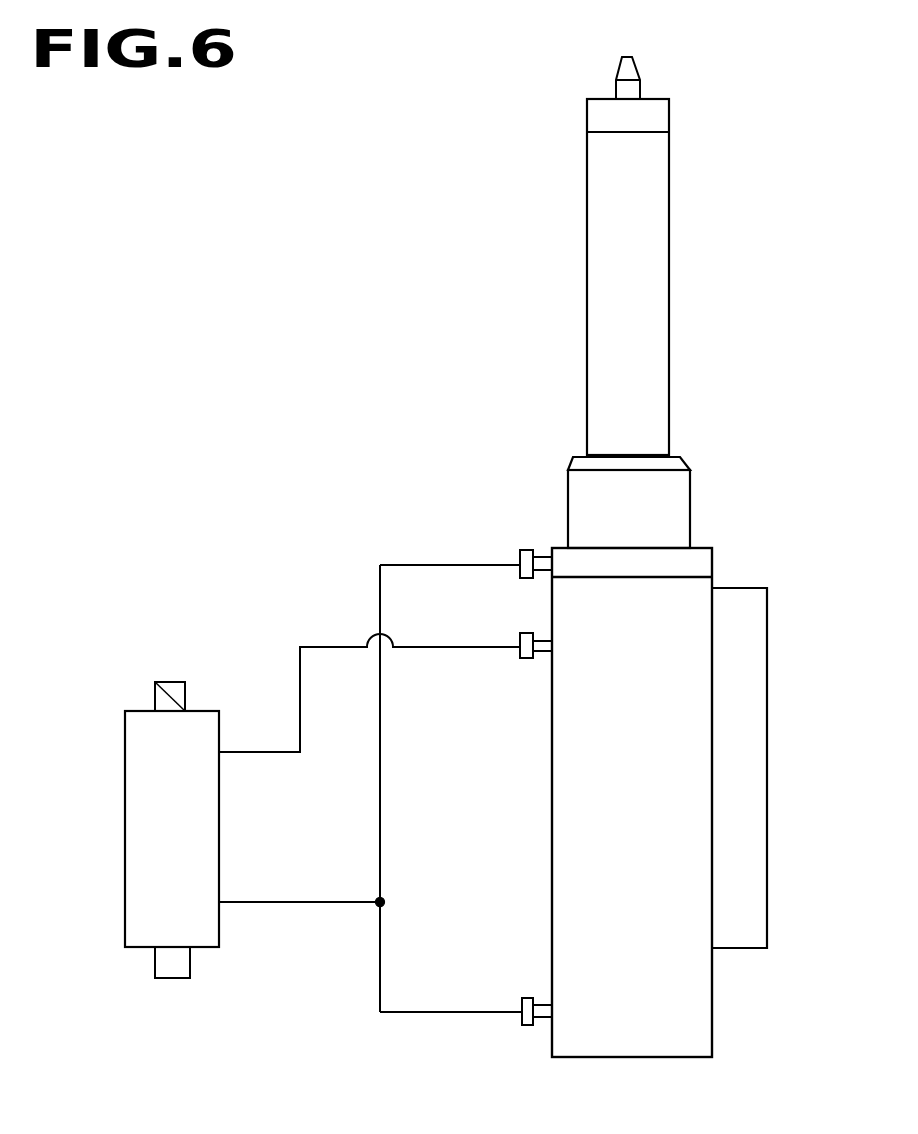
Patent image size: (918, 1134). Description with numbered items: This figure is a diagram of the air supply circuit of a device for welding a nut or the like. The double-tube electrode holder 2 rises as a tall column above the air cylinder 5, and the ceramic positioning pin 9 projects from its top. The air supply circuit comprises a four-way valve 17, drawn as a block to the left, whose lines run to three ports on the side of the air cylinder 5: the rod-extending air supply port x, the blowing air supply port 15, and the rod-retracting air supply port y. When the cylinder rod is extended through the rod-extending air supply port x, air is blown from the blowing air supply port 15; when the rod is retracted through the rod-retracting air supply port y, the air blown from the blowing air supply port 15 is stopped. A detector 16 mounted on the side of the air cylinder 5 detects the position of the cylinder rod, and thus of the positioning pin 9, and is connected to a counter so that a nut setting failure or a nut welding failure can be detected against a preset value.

The positioning pin 9 is at (632, 73).
The double-tube electrode holder 2 is at (672, 261).
The air cylinder 5 is at (680, 1013).
The blowing air supply port 15 is at (528, 548).
The detector 16 is at (745, 750).
The four-way valve 17 is at (148, 793).
The rod-extending air supply port x is at (523, 1025).
The rod-retracting air supply port y is at (521, 659).